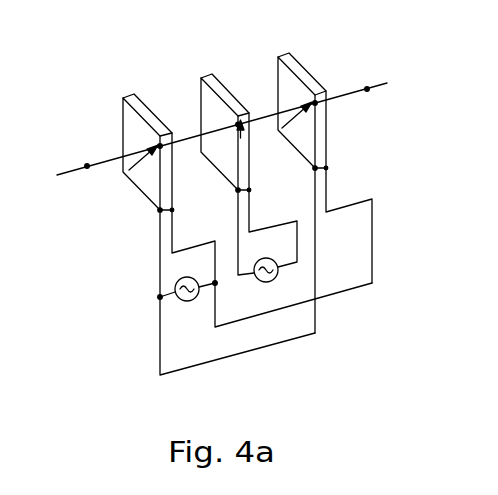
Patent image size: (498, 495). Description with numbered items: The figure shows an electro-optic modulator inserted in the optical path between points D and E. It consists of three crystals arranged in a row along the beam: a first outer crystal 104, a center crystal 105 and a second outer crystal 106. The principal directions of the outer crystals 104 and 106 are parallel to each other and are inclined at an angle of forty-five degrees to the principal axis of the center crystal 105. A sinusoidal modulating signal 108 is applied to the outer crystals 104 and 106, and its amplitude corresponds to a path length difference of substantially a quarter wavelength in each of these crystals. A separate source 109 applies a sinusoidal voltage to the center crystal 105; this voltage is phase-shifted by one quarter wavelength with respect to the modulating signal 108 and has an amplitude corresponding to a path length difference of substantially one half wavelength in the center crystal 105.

The outer crystal 104 is at (147, 197).
The center crystal 105 is at (221, 173).
The outer crystal 106 is at (293, 149).
The modulating signal 108 is at (196, 299).
The source 109 is at (286, 287).
The point E is at (222, 117).